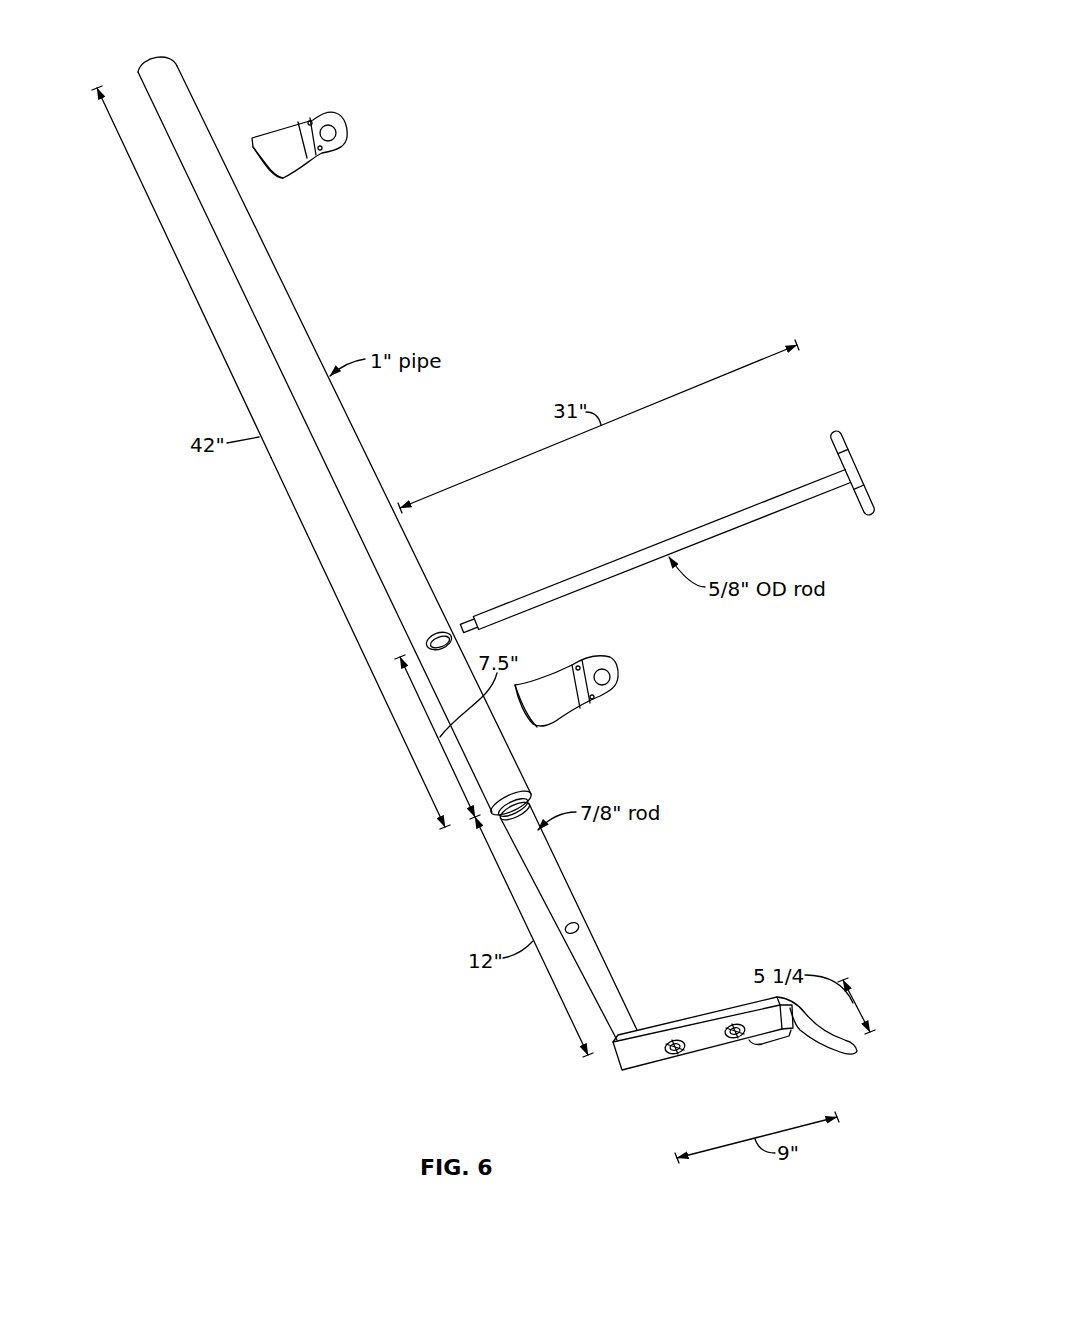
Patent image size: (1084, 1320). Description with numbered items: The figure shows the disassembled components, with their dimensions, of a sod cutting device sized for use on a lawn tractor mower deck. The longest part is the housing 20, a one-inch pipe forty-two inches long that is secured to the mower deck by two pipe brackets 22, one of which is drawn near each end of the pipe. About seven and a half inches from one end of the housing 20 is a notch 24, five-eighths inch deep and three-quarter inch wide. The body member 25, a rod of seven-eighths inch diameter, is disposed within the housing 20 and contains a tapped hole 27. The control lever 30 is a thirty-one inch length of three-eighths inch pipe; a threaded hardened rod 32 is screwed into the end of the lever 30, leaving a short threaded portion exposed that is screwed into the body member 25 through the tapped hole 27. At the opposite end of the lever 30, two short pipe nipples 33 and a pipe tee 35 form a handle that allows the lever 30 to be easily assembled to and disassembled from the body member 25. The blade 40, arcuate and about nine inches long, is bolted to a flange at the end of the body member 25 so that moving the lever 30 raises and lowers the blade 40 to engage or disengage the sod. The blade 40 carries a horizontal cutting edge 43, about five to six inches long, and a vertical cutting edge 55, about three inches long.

The housing 20 is at (302, 322).
The pipe bracket 22 is at (344, 116).
The notch 24 is at (437, 633).
The body member 25 is at (557, 866).
The tapped hole 27 is at (577, 923).
The lever 30 is at (741, 528).
The hardened rod 32 is at (463, 620).
The pipe nipple 33 is at (832, 435).
The pipe tee 35 is at (863, 461).
The blade 40 is at (697, 1062).
The horizontal cutting edge 43 is at (836, 1056).
The vertical cutting edge 55 is at (773, 1047).